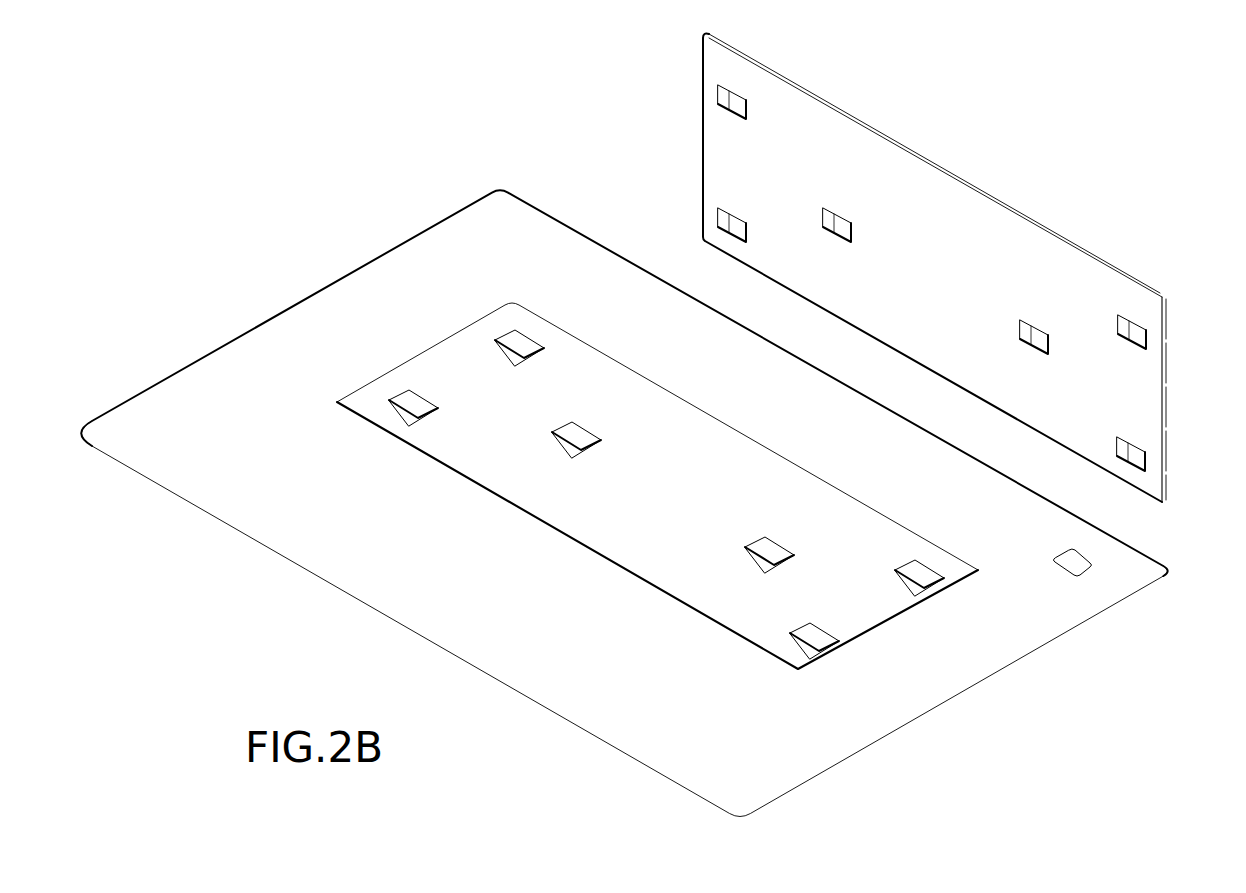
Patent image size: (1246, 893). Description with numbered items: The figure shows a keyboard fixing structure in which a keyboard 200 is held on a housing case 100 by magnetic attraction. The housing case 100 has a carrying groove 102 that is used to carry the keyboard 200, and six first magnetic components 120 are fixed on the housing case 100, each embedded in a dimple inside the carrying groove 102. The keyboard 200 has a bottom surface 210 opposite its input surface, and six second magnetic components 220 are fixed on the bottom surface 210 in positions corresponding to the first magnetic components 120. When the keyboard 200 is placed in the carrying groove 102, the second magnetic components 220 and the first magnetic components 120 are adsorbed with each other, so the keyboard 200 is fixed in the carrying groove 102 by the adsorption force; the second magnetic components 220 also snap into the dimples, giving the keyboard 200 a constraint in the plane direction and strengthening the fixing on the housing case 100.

The housing case 100 is at (857, 718).
The carrying groove 102 is at (846, 620).
The first magnetic components 120 is at (403, 400).
The keyboard 200 is at (924, 268).
The bottom surface 210 is at (722, 146).
The second magnetic components 220 is at (720, 95).